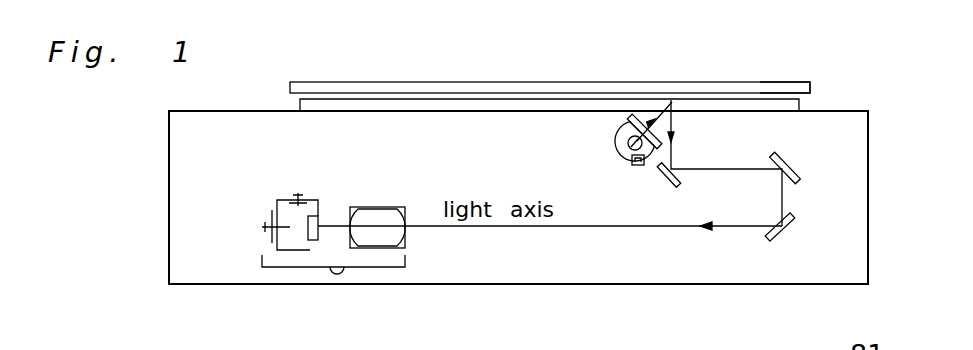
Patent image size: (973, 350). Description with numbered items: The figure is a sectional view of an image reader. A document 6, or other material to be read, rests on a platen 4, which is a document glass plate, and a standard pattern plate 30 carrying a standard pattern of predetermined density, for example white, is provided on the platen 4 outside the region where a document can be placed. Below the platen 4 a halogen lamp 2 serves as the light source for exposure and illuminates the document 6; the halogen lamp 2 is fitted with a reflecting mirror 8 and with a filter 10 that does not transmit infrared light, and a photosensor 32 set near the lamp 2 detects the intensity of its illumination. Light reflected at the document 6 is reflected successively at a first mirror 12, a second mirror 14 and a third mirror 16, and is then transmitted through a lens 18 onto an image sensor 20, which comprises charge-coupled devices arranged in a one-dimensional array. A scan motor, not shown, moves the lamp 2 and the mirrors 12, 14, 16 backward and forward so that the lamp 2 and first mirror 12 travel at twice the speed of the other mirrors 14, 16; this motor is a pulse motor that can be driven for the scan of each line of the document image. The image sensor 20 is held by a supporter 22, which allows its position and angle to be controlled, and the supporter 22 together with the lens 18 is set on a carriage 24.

The halogen lamp 2 is at (628, 143).
The platen 4 is at (545, 111).
The document 6 is at (573, 99).
The reflecting mirror 8 is at (617, 129).
The filter 10 is at (640, 122).
The first mirror 12 is at (676, 187).
The second mirror 14 is at (795, 172).
The third mirror 16 is at (795, 222).
The lens 18 is at (377, 233).
The image sensor 20 is at (308, 235).
The supporter 22 is at (277, 232).
The carriage 24 is at (391, 268).
The standard pattern plate 30 is at (777, 98).
The photosensor 32 is at (637, 166).